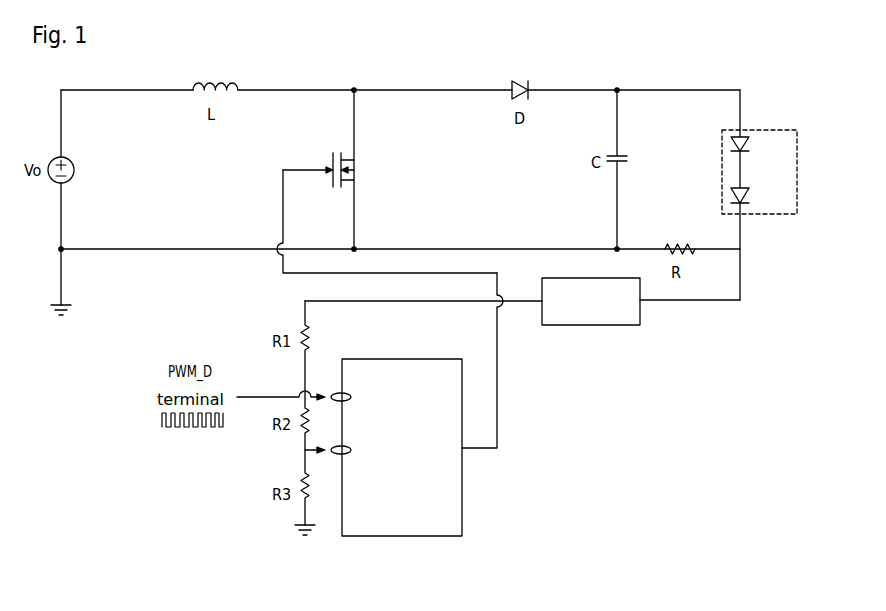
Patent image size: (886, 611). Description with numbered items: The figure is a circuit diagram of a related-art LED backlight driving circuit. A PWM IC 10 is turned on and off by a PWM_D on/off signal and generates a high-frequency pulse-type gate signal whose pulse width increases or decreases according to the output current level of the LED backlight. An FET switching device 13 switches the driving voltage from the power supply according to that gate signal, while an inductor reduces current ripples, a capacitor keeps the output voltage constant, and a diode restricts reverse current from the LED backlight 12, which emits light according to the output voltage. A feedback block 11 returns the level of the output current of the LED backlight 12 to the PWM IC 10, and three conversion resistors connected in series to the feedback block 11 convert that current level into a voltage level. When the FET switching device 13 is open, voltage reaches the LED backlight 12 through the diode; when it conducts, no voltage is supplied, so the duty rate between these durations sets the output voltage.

The PWM IC 10 is at (400, 359).
The feedback block 11 is at (595, 325).
The LED backlight 12 is at (797, 171).
The FET switching device 13 is at (335, 188).